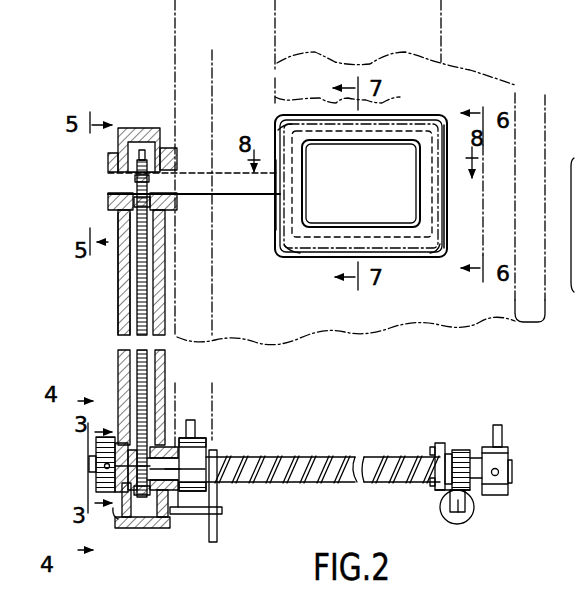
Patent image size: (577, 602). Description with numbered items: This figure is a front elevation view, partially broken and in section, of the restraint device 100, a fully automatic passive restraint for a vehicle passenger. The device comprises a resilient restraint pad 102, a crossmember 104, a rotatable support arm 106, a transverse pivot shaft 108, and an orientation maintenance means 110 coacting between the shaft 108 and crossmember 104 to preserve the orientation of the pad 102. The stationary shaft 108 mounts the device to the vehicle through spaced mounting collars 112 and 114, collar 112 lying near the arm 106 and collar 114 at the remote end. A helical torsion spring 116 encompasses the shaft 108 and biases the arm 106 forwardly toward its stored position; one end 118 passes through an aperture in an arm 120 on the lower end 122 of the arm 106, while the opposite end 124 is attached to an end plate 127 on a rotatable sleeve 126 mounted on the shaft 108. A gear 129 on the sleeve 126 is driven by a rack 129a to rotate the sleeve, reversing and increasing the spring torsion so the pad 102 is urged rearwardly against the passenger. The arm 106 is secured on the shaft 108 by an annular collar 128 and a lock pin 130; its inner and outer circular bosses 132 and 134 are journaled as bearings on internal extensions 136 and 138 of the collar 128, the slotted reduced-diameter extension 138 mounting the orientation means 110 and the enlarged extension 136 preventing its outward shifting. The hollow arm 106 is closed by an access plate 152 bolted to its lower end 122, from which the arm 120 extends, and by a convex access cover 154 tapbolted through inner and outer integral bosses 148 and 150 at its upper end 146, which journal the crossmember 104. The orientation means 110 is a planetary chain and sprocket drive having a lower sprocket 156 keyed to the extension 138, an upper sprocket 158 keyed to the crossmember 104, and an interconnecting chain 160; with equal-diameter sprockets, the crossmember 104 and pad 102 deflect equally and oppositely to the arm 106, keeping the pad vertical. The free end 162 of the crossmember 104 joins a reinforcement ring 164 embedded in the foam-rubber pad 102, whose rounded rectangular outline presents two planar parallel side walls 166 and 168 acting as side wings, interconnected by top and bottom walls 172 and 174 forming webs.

The restraint device 100 is at (123, 120).
The restraint pad 102 is at (450, 113).
The pad-supporting crossmember 104 is at (193, 170).
The rotatable support arm 106 is at (117, 280).
The transverse pivot shaft 108 is at (320, 490).
The orientation maintenance means 110 is at (140, 306).
The mounting collar 112 is at (206, 440).
The mounting collar 114 is at (508, 448).
The helical torsion spring 116 is at (322, 460).
The torsion spring end 118 is at (218, 515).
The arm 120 is at (190, 514).
The lower end of rotatable arm 122 is at (118, 519).
The torsion spring end 124 is at (438, 450).
The rotatable collar 126 is at (468, 446).
The end plate 127 is at (446, 490).
The annular collar 128 is at (96, 456).
The gear 129 is at (478, 493).
The rack 129a is at (448, 522).
The lock pin 130 is at (104, 468).
The inner circular boss 132 is at (170, 448).
The outer circular boss 134 is at (122, 442).
The outer internal extension 136 is at (125, 465).
The inner internal extension 138 is at (160, 470).
The upper end of rotatable arm 146 is at (120, 222).
The inner integral boss 148 is at (175, 148).
The outer integral boss 150 is at (108, 204).
The access plate 152 is at (145, 530).
The access cover 154 is at (118, 130).
The lower sprocket 156 is at (148, 492).
The upper sprocket 158 is at (108, 172).
The chain 160 is at (143, 370).
The free end of crossmember 162 is at (280, 148).
The reinforcement ring 164 is at (325, 232).
The side wall 166 is at (272, 210).
The side wall 168 is at (448, 232).
The top wall 172 is at (405, 116).
The bottom wall 174 is at (400, 258).